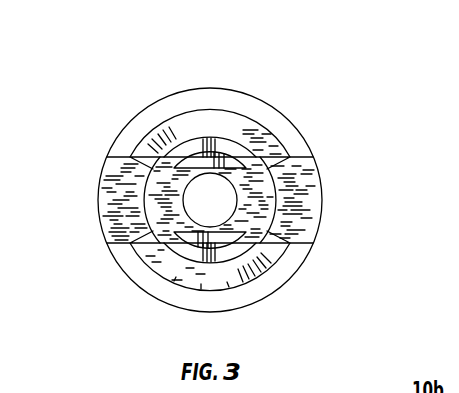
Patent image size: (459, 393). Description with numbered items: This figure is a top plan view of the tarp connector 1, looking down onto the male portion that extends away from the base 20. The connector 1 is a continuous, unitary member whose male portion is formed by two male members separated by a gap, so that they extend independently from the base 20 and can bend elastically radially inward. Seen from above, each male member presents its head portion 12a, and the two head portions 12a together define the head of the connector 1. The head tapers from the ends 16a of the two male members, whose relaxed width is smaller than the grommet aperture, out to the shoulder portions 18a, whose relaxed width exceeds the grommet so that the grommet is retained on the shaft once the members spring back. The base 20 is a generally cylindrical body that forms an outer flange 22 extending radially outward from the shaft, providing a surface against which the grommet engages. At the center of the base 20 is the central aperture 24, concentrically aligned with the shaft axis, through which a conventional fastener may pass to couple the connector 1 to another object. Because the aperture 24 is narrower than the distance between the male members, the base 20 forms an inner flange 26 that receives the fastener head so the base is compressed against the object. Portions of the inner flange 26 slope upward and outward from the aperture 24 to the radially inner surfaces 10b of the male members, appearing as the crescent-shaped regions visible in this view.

The connector 1 is at (341, 52).
The radially inner surfaces of the male members 10b is at (203, 140).
The head portion 12a is at (247, 130).
The ends of the two male members 16a is at (240, 145).
The shoulder portion 18a is at (207, 110).
The base portion 20 is at (116, 138).
The outer flange 22 is at (122, 218).
The central aperture 24 is at (215, 203).
The inner flange 26 is at (185, 205).